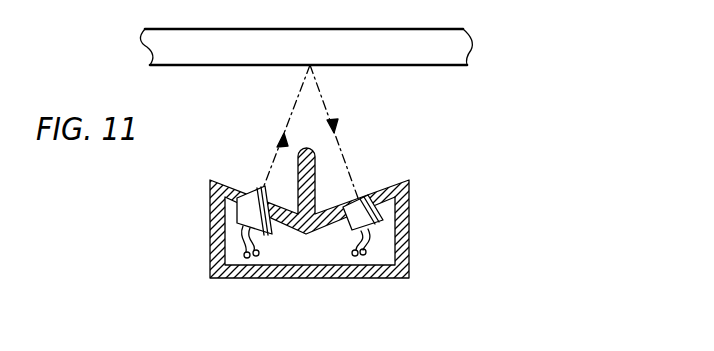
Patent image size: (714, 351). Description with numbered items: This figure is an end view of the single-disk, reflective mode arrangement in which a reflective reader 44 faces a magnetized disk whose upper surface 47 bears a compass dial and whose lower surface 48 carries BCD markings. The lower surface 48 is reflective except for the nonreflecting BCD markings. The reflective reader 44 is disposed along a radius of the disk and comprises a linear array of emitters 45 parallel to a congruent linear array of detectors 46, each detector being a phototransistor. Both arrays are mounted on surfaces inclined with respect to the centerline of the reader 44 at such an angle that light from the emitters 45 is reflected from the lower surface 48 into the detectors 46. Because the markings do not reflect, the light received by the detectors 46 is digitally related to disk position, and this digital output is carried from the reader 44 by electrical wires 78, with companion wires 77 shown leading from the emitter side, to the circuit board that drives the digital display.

The reflective reader 44 is at (427, 213).
The emitters 45 is at (236, 212).
The detectors 46 is at (367, 195).
The upper surface 47 is at (442, 28).
The lower surface 48 is at (228, 67).
The first transducer cable 77 is at (241, 247).
The electrical wires 78 is at (373, 246).